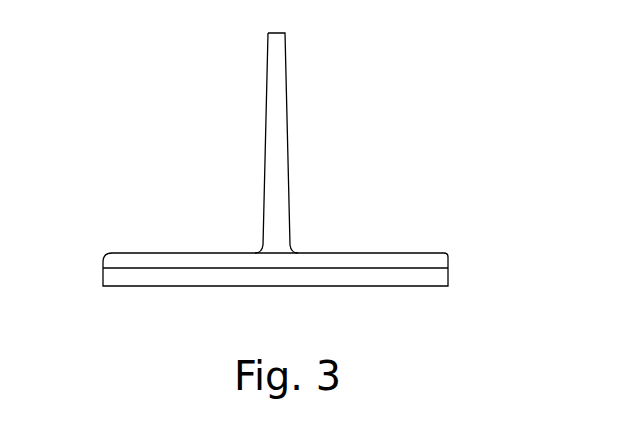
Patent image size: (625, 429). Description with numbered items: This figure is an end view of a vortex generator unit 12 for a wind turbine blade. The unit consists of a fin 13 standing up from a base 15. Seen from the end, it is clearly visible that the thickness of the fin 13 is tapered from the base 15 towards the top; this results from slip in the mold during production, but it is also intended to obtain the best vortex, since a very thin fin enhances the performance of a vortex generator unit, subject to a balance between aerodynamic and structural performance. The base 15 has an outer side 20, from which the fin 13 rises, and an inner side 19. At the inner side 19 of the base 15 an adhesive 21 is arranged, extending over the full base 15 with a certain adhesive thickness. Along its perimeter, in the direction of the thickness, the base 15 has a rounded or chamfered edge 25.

The vortex generator unit 12 is at (246, 113).
The fin 13 is at (277, 95).
The base 15 is at (187, 260).
The inner side of the base 19 is at (355, 268).
The outer side of the base 20 is at (360, 254).
The adhesive 21 is at (417, 278).
The rounded/chamfered edge 25 is at (448, 255).